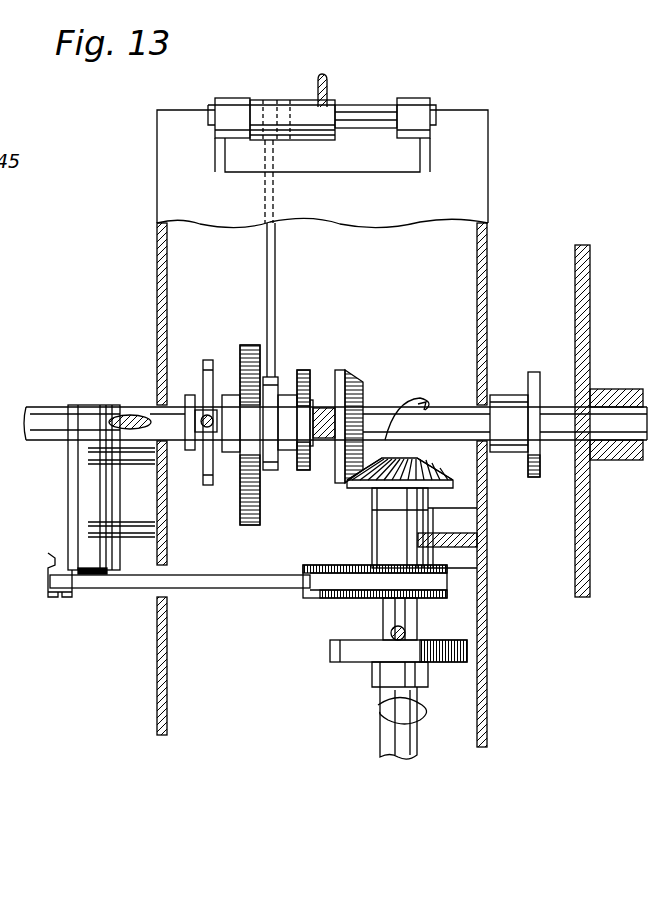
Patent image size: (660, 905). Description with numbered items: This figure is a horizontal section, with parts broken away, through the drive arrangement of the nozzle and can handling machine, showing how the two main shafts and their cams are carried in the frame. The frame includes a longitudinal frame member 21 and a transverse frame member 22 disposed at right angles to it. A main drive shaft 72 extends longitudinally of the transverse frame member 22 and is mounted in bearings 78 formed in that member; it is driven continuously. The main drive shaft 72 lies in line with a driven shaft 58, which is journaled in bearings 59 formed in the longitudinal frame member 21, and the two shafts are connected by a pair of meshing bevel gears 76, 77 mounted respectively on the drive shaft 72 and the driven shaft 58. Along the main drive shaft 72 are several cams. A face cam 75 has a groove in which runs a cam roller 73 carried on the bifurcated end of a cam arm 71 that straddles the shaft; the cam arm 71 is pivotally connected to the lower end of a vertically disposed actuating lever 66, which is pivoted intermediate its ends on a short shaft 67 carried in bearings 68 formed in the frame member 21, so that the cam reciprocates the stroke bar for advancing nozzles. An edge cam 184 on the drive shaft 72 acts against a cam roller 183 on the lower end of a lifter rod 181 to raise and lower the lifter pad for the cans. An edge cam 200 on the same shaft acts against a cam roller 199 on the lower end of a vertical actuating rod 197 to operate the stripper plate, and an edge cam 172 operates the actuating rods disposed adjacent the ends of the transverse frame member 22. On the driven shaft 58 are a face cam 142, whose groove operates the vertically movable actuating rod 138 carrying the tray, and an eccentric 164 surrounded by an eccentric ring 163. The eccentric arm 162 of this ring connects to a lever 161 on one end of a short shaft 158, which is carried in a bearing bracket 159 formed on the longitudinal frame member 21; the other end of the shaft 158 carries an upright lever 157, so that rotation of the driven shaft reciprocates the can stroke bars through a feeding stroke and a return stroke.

The longitudinal frame member 21 is at (483, 268).
The transverse frame member 22 is at (576, 518).
The driven shaft 58 is at (386, 738).
The bearings 59 is at (382, 518).
The actuating lever 66 is at (300, 102).
The short shaft 67 is at (366, 108).
The bearings 68 is at (233, 108).
The cam arm 71 is at (276, 250).
The main drive shaft 72 is at (400, 412).
The cam roller 73 is at (272, 377).
The face cam 75 is at (248, 346).
The bevel gear 76 is at (352, 378).
The bevel gear 77 is at (442, 472).
The bearings 78 is at (612, 462).
The actuating rod 138 is at (407, 632).
The face cam 142 is at (334, 651).
The upright lever 157 is at (130, 413).
The short shaft 158 is at (95, 578).
The bearing bracket 159 is at (78, 481).
The lever 161 is at (70, 550).
The eccentric arm 162 is at (233, 582).
The eccentric ring 163 is at (305, 568).
The eccentric 164 is at (336, 598).
The edge cam 172 is at (533, 373).
The lifter rod 181 is at (324, 442).
The cam roller 183 is at (322, 406).
The edge cam 184 is at (310, 370).
The actuating rod 197 is at (205, 434).
The cam roller 199 is at (189, 396).
The edge cam 200 is at (208, 360).